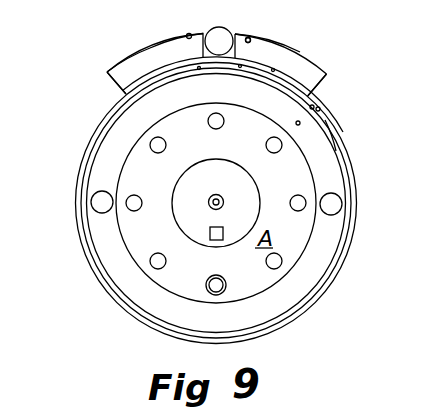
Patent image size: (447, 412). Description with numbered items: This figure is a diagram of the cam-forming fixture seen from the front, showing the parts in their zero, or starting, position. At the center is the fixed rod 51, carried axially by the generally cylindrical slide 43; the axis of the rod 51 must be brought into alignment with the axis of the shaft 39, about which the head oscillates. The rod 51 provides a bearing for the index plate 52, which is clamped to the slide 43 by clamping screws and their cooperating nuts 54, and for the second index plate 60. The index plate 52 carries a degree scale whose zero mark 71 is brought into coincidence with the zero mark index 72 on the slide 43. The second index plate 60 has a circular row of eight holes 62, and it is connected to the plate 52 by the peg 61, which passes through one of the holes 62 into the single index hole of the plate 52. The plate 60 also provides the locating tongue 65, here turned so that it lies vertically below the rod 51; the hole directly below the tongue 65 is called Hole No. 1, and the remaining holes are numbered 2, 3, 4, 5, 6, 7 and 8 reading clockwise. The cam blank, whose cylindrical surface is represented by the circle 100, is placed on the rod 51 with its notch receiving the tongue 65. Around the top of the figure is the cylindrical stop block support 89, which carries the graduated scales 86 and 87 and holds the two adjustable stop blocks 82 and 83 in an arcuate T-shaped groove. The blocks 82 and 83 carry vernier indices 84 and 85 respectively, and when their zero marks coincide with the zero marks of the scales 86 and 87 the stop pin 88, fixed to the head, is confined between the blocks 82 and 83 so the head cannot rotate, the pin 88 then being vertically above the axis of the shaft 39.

The adjustable stop block 82 is at (318, 68).
The adjustable stop block 83 is at (108, 72).
The vernier index 84 is at (250, 41).
The vernier index 85 is at (197, 49).
The graduated scale 86 is at (270, 65).
The graduated scale 87 is at (128, 66).
The stop pin 88 is at (219, 52).
The zero mark index 72 is at (322, 98).
The slide 43 is at (322, 107).
The stop block support 89 is at (343, 132).
The zero mark 71 is at (336, 151).
The nut 54 is at (101, 202).
The index plate 52 is at (340, 250).
The second index plate 60 is at (128, 252).
The peg 61 is at (208, 288).
The holes 62 is at (217, 291).
The locating tongue 65 is at (218, 242).
The fixed rod 51 is at (218, 196).
The shaft 39 is at (222, 204).
The circle 100 is at (221, 157).
The Hole No. 1 is at (219, 287).
The Hole No. 2 is at (158, 267).
The Hole No. 3 is at (134, 209).
The Hole No. 4 is at (158, 151).
The Hole No. 5 is at (216, 127).
The Hole No. 6 is at (274, 152).
The Hole No. 7 is at (298, 209).
The Hole No. 8 is at (274, 268).